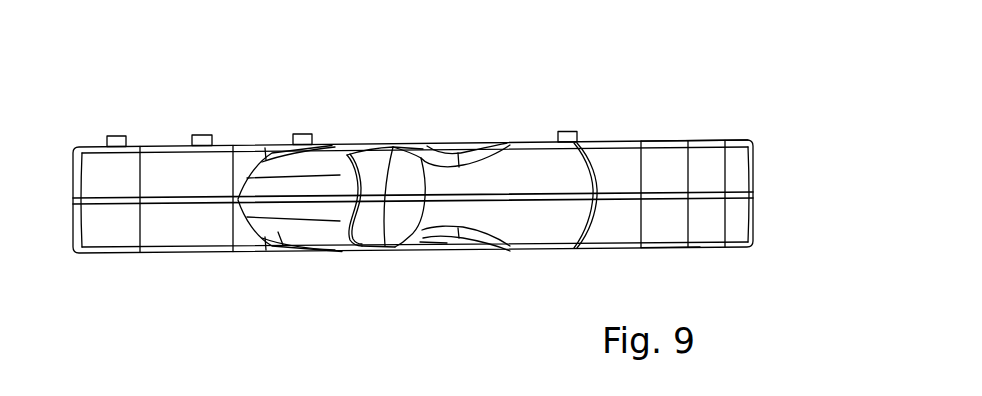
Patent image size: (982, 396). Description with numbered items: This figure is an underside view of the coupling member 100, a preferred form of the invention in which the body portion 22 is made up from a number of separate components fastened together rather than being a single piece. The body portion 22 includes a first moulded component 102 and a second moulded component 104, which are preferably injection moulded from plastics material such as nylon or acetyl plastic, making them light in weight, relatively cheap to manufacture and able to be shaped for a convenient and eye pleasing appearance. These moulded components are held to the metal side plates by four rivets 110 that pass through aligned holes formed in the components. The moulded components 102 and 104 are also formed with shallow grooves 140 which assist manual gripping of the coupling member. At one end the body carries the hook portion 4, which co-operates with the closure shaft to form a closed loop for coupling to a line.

The hook portion 4 is at (96, 231).
The body portion 22 is at (655, 248).
The coupling member 100 is at (322, 310).
The first moulded component 102 is at (693, 140).
The second moulded component 104 is at (726, 250).
The rivets 110 is at (116, 136).
The shallow grooves 140 is at (483, 142).